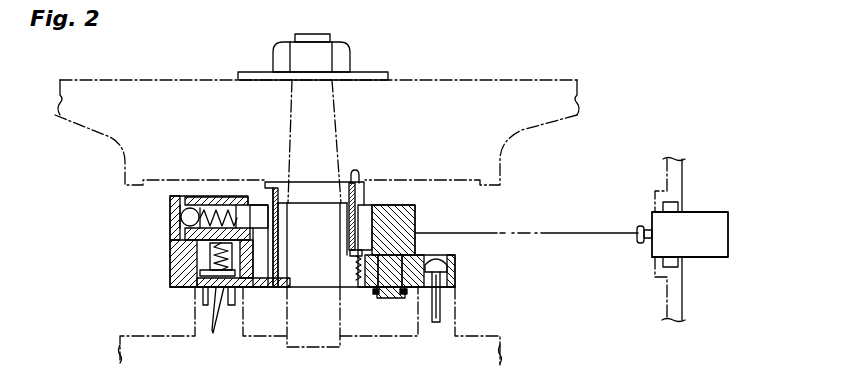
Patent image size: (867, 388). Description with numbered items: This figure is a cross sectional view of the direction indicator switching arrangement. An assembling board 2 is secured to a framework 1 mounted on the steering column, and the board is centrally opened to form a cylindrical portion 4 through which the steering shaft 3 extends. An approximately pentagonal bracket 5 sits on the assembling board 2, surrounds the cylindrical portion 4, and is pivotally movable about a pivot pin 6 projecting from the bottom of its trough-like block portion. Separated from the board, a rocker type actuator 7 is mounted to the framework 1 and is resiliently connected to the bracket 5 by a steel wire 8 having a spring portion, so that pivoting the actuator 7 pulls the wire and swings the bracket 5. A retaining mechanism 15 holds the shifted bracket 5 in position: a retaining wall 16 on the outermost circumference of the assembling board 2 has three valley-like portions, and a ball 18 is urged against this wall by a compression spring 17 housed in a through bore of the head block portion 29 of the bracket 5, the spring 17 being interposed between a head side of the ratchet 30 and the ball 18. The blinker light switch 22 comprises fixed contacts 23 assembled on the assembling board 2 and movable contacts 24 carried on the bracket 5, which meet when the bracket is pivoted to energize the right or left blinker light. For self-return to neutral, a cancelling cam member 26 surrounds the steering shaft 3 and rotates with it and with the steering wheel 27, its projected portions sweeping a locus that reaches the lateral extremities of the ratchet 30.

The framework 1 is at (476, 331).
The assembling board 2 is at (172, 278).
The steering shaft 3 is at (339, 124).
The cylindrical portion 4 is at (284, 235).
The bracket 5 is at (417, 215).
The pivot pin 6 is at (392, 299).
The actuator 7 is at (713, 214).
The steel wire 8 is at (586, 232).
The retaining (dent) mechanism 15 is at (183, 197).
The retaining wall 16 is at (172, 211).
The spring 17 is at (232, 199).
The ball 18 is at (182, 222).
The direction indicator blinker light switch 22 is at (188, 290).
The fixed contacts 23 is at (219, 324).
The movable contacts 24 is at (198, 268).
The cancelling cam member 26 is at (360, 191).
The steering wheel 27 is at (148, 80).
The head block portion 29 is at (211, 197).
The ratchet 30 is at (258, 185).